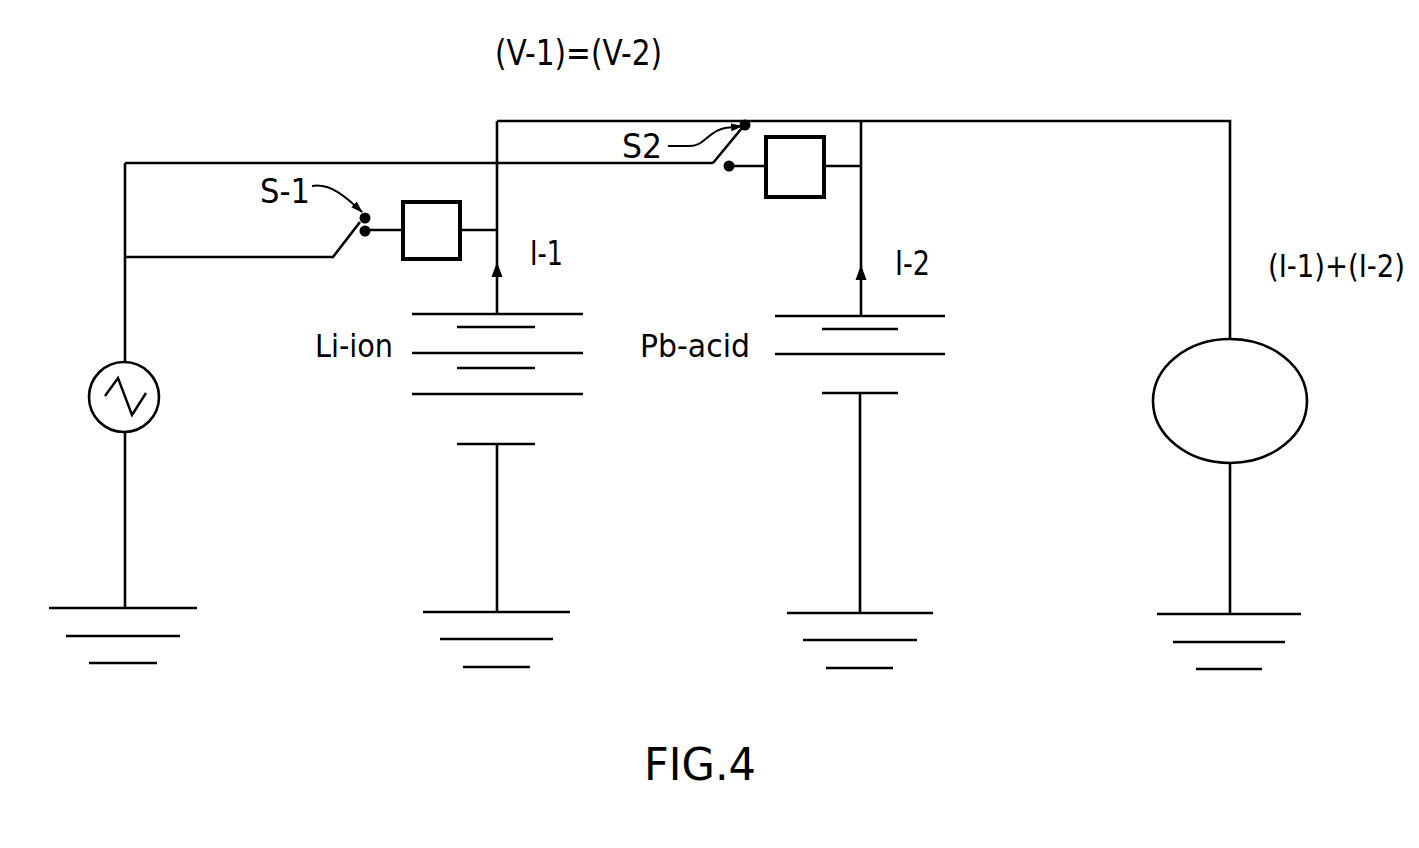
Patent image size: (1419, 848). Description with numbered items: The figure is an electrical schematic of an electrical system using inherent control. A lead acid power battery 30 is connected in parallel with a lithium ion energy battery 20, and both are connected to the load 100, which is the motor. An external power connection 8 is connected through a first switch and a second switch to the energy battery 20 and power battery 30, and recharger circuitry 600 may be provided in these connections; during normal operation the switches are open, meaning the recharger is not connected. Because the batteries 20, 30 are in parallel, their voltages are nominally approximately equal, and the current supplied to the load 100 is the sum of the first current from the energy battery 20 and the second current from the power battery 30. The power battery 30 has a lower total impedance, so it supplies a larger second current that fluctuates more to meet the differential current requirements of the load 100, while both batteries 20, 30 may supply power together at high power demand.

The external power connection 8 is at (166, 413).
The energy battery 20 is at (408, 377).
The power battery 30 is at (778, 375).
The recharger circuitry 600 is at (464, 209).
The load 100 is at (1163, 437).